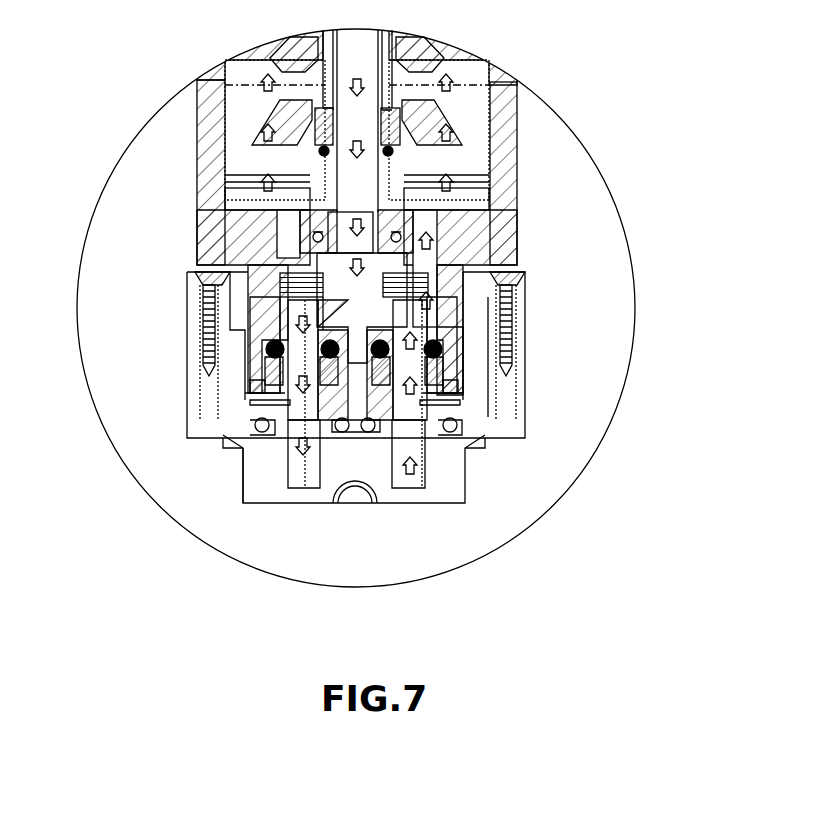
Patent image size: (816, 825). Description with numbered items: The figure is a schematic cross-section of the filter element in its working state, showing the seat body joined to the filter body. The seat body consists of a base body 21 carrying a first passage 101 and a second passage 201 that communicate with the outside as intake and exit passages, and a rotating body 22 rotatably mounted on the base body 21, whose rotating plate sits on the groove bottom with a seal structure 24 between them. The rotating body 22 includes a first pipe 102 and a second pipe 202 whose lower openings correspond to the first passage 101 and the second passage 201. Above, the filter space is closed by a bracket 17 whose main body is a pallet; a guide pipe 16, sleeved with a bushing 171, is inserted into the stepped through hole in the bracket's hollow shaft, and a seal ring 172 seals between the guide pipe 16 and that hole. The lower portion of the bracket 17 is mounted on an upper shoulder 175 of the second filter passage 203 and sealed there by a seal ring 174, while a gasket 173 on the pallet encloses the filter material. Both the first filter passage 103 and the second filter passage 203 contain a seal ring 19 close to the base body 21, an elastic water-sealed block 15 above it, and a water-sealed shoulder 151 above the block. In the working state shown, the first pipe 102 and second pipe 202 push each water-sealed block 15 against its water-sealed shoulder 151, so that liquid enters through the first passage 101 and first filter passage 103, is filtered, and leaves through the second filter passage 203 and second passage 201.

The guide pipe 16 is at (385, 48).
The bushing 171 is at (395, 92).
The seal ring 172 is at (325, 148).
The bracket 17 is at (518, 88).
The gasket 173 is at (285, 185).
The seal ring 174 is at (310, 237).
The first filter passage 103 is at (425, 228).
The upper shoulder 175 is at (420, 283).
The water-sealed shoulder 151 is at (300, 265).
The water-sealed block 15 is at (215, 283).
The first pipe 102 is at (415, 355).
The second filter passage 203 is at (290, 305).
The seal ring 19 is at (275, 355).
The second pipe 202 is at (245, 405).
The base body 21 is at (265, 485).
The second passage 201 is at (305, 480).
The first passage 101 is at (410, 462).
The rotating body 22 is at (345, 430).
The seal structure 24 is at (367, 430).